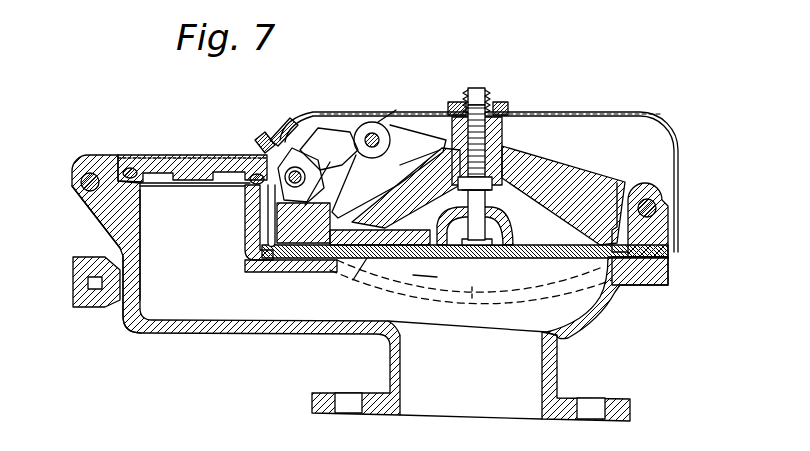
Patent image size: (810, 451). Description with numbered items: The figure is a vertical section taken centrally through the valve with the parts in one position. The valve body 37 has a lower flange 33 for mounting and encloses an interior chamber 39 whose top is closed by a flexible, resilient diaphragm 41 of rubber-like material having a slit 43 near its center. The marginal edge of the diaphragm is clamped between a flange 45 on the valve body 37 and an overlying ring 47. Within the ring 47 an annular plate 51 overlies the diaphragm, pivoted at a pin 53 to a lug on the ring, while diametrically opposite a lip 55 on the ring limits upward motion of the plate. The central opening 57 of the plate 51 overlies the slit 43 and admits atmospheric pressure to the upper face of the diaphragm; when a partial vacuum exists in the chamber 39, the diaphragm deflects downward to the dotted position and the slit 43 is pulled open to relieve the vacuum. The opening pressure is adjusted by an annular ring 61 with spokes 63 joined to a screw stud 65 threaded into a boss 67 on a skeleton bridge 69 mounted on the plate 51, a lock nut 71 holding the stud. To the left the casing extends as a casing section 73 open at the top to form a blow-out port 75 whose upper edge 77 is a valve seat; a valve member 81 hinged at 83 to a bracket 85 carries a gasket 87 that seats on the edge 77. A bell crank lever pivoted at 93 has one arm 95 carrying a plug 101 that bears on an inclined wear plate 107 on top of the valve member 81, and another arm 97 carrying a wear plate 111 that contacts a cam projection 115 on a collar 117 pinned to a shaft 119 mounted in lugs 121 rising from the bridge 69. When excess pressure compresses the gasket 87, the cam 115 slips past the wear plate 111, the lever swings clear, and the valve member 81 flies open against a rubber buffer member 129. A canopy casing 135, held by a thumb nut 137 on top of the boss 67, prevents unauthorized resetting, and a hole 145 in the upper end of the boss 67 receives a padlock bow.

The lower flange 33 is at (615, 406).
The valve body 37 is at (598, 319).
The interior chamber 39 is at (471, 292).
The diaphragm 41 is at (372, 300).
The slit 43 is at (470, 260).
The flange 45 is at (326, 270).
The ring 47 is at (270, 230).
The plate 51 is at (424, 226).
The pin 53 is at (668, 198).
The lip 55 is at (330, 210).
The opening 57 is at (517, 237).
The annular ring 61 is at (524, 280).
The spokes 63 is at (489, 219).
The screw stud 65 is at (464, 193).
The threaded boss 67 is at (503, 140).
The bridge 69 is at (532, 168).
The lock nut 71 is at (461, 186).
The casing section 73 is at (178, 259).
The blow out port 75 is at (169, 245).
The upper edge 77 is at (142, 186).
The valve member 81 is at (182, 158).
The hinge 83 is at (81, 178).
The bracket 85 is at (103, 210).
The gasket 87 is at (134, 167).
The pivot 93 is at (297, 170).
The arm 95 is at (276, 130).
The arm 97 is at (332, 130).
The plug 101 is at (262, 158).
The wear plate 107 is at (228, 130).
The wear plate 111 is at (360, 133).
The cam projection 115 is at (358, 188).
The collar 117 is at (393, 148).
The shaft 119 is at (416, 80).
The lugs 121 is at (440, 135).
The buffer member 129 is at (95, 304).
The casing 135 is at (712, 130).
The thumb nut 137 is at (503, 102).
The hole 145 is at (545, 68).